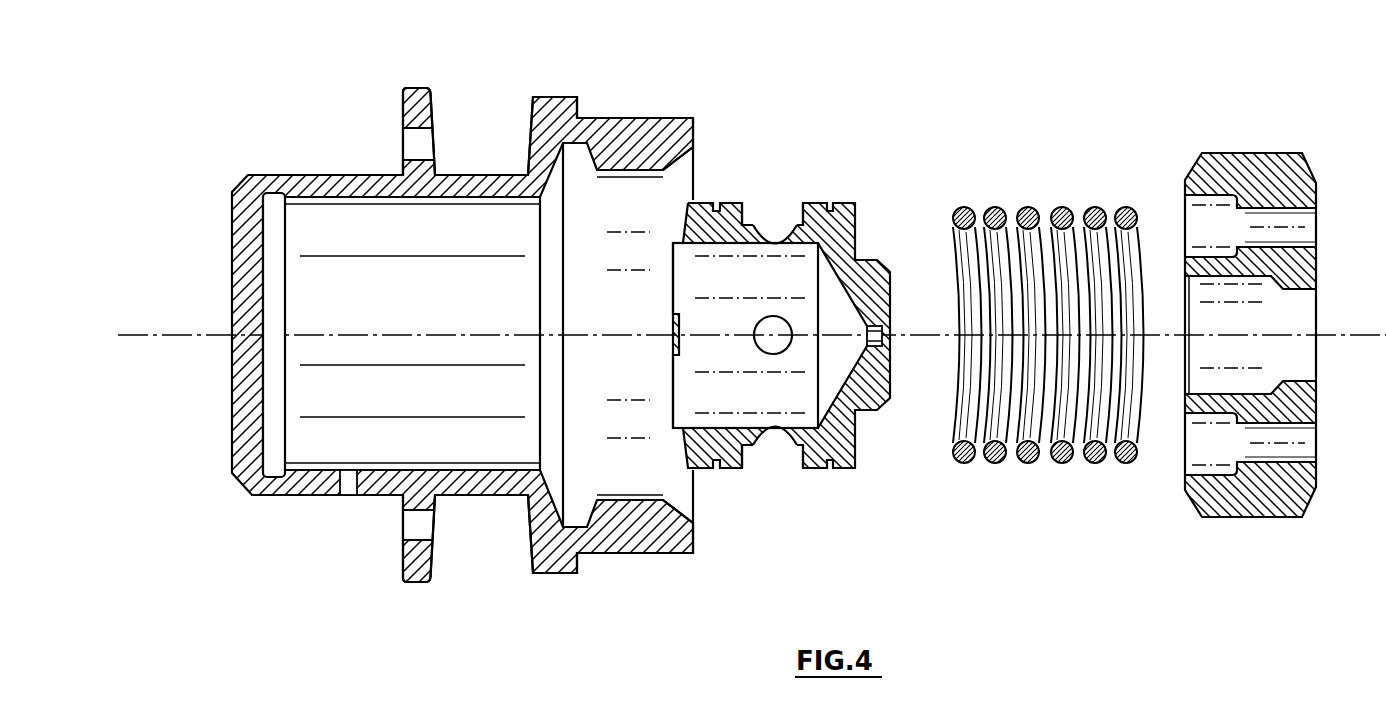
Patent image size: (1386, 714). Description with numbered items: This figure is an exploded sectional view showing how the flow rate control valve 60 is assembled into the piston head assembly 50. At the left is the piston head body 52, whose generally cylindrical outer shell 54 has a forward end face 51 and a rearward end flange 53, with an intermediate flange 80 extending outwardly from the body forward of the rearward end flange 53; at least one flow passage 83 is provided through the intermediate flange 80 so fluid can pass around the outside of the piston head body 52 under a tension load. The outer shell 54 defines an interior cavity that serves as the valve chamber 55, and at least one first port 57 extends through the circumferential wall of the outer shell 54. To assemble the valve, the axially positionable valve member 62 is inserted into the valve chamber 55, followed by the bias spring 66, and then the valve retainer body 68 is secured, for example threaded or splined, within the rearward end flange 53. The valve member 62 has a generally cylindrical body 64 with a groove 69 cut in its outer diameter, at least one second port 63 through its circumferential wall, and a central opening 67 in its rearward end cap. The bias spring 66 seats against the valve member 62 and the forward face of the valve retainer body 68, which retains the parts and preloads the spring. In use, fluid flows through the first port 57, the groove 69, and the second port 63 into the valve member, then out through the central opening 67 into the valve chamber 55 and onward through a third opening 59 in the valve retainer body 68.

The piston head assembly 50 is at (315, 538).
The forward end face 51 is at (232, 248).
The piston head body 52 is at (486, 150).
The rearward end flange 53 is at (620, 118).
The outer shell 54 is at (326, 173).
The valve chamber 55 is at (296, 390).
The first port 57 is at (350, 477).
The third opening 59 is at (1197, 221).
The flow rate control valve 60 is at (958, 125).
The valve member 62 is at (817, 203).
The second port 63 is at (777, 240).
The cylindrical body 64 is at (728, 428).
The bias spring 66 is at (950, 238).
The central opening 67 is at (867, 336).
The valve retainer body 68 is at (1221, 152).
The groove 69 is at (768, 207).
The intermediate flange 80 is at (414, 88).
The flow passage 83 is at (405, 143).